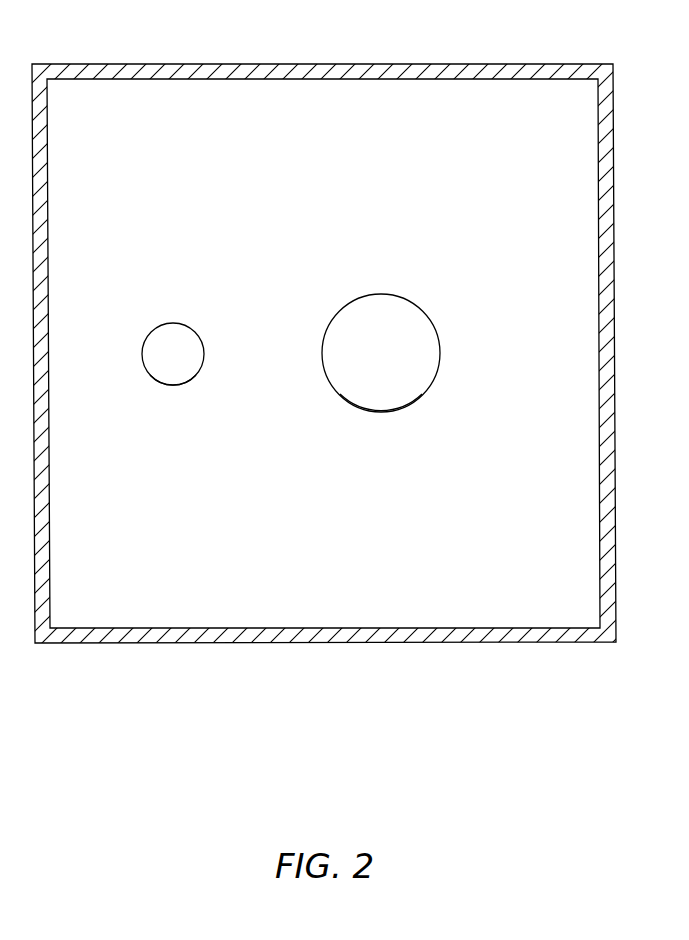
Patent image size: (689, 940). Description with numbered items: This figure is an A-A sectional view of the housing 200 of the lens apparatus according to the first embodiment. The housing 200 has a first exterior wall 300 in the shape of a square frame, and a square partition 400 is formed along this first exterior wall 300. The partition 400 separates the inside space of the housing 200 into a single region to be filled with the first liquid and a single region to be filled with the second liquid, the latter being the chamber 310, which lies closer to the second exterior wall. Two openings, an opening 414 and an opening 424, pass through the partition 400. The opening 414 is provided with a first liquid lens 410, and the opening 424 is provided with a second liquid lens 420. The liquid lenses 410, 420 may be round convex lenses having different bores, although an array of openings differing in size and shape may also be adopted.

The housing 200 is at (347, 758).
The first exterior wall 300 is at (316, 64).
The chamber 310 is at (346, 601).
The partition 400 is at (463, 103).
The first liquid lens 410 is at (182, 338).
The opening 414 is at (184, 384).
The second liquid lens 420 is at (391, 310).
The opening 424 is at (402, 407).